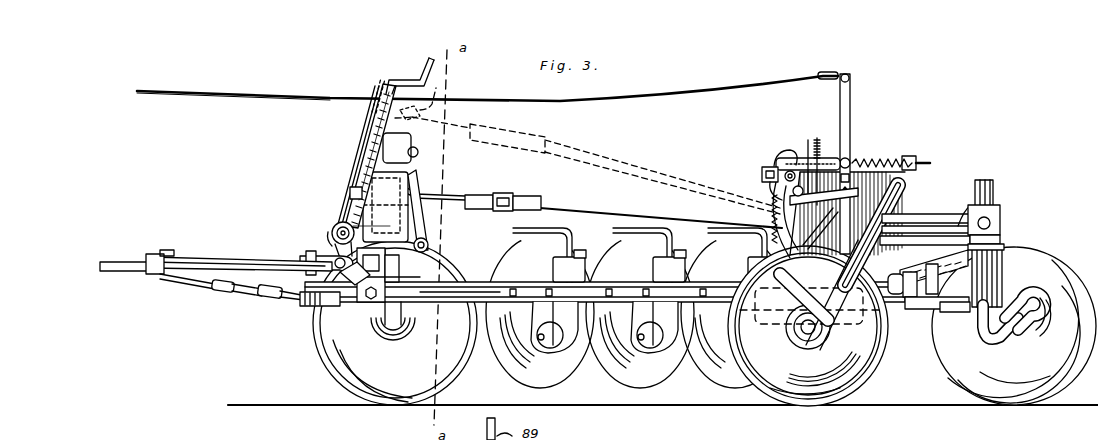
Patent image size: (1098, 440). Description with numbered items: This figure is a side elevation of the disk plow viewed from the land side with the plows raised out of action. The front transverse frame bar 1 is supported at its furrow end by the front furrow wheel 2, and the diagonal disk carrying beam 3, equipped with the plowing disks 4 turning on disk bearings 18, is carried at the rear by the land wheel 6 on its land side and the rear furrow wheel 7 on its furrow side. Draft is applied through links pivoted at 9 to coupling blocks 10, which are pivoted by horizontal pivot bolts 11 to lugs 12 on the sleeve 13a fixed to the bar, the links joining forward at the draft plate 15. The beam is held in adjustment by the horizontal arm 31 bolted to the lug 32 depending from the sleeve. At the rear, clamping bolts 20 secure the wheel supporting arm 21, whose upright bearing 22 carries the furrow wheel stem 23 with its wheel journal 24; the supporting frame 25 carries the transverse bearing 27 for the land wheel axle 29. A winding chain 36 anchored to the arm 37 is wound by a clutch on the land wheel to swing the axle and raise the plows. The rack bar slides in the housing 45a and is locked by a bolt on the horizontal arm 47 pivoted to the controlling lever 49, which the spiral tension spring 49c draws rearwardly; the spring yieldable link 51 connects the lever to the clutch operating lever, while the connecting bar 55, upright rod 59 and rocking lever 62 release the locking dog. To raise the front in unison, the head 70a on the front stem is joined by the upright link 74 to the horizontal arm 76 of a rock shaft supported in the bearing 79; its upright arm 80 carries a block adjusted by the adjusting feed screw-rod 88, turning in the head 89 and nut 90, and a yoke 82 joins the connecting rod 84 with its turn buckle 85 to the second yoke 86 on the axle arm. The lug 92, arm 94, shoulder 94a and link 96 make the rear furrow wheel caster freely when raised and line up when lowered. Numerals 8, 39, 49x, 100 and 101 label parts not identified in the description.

The frame bar 1 is at (395, 262).
The front furrow wheel 2 is at (395, 323).
The disk carrying beam 3 is at (472, 289).
The plowing disks 4 is at (637, 312).
The land wheel 6 is at (808, 323).
The rear furrow wheel 7 is at (1014, 326).
The draft pole 8 is at (238, 262).
The draft link pivot 9 is at (332, 233).
The coupling blocks 10 is at (308, 252).
The horizontal pivot bolts 11 is at (345, 272).
The lugs 12 is at (360, 290).
The sleeve 13a is at (425, 272).
The draft plate 15 is at (122, 262).
The disk bearings 18 is at (540, 318).
The clamping bolts 20 is at (910, 272).
The wheel supporting arm 21 is at (955, 262).
The upright bearing 22 is at (1002, 274).
The furrow wheel stem 23 is at (993, 188).
The wheel journal 24 is at (1028, 306).
The supporting frame 25 is at (905, 214).
The horizontal transversely extending bearing 27 is at (910, 192).
The land wheel axle 29 is at (888, 248).
The horizontal arm 31 is at (460, 291).
The lug 32 is at (370, 300).
The winding chain 36 is at (940, 314).
The arm 37 is at (983, 338).
The rod 39 is at (765, 206).
The housing 45a is at (760, 176).
The horizontal arm 47 is at (832, 157).
The controlling lever 49 is at (851, 122).
The top rod 49x is at (748, 92).
The spiral tension spring 49c is at (898, 158).
The spring yieldable link 51 is at (814, 242).
The connecting bar 55 is at (822, 194).
The upright rod 59 is at (817, 138).
The rocking lever 62 is at (796, 163).
The head 70a is at (410, 143).
The upright link 74 is at (424, 222).
The horizontal arm 76 is at (428, 242).
The bearing 79 is at (312, 227).
The upright arm 80 is at (358, 160).
The yoke 82 is at (378, 196).
The connecting rod 84 is at (452, 196).
The turn buckle 85 is at (518, 196).
The second yoke 86 is at (836, 252).
The adjusting feed screw-rod 88 is at (366, 138).
The head 89 is at (388, 82).
The nut 90 is at (350, 192).
The lug 92 is at (961, 205).
The arm 94 is at (992, 223).
The shoulder 94a is at (932, 222).
The link 96 is at (1000, 240).
The bracket 100 is at (312, 306).
The rod 101 is at (252, 292).